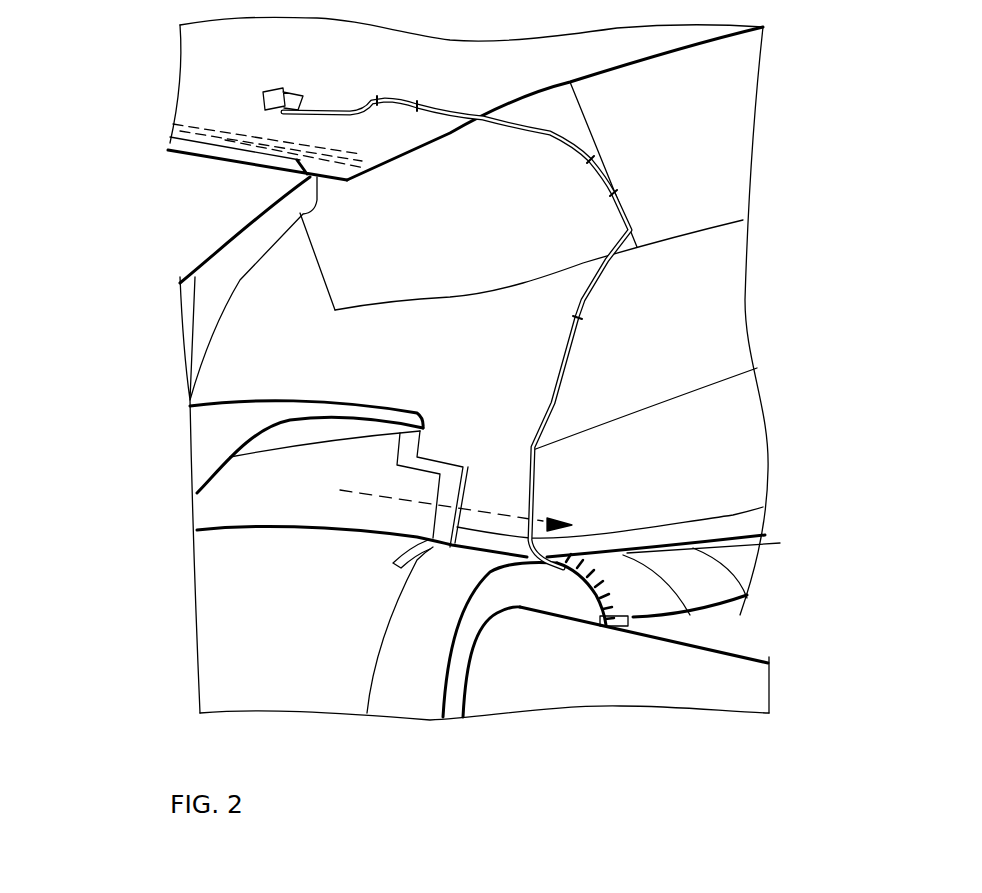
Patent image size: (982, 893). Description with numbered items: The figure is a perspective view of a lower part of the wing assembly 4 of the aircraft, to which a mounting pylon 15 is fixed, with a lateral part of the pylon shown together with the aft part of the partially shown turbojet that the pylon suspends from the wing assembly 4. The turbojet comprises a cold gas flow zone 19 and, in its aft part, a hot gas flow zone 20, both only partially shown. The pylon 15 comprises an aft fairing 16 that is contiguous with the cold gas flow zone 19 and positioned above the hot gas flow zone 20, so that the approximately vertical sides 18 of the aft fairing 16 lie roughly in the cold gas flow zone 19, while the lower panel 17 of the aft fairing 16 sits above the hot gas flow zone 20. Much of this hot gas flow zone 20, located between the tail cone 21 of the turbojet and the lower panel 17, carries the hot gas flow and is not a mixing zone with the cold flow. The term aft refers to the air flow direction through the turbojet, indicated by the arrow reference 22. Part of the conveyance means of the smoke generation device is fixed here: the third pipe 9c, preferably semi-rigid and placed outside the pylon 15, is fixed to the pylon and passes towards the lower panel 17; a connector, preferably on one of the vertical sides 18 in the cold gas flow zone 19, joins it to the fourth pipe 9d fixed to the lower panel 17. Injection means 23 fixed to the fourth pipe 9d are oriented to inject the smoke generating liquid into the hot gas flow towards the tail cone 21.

The wing assembly 4 is at (207, 60).
The mounting pylon 15 is at (718, 158).
The aft fairing 16 is at (795, 457).
The lower panel 17 is at (733, 556).
The vertical sides 18 is at (700, 440).
The cold gas flow zone 19 is at (225, 538).
The hot gas flow zone 20 is at (457, 668).
The tail cone 21 is at (722, 697).
The arrow reference 22 is at (456, 499).
The injection means 23 is at (660, 623).
The third pipe 9c is at (553, 403).
The fourth pipe 9d is at (622, 595).